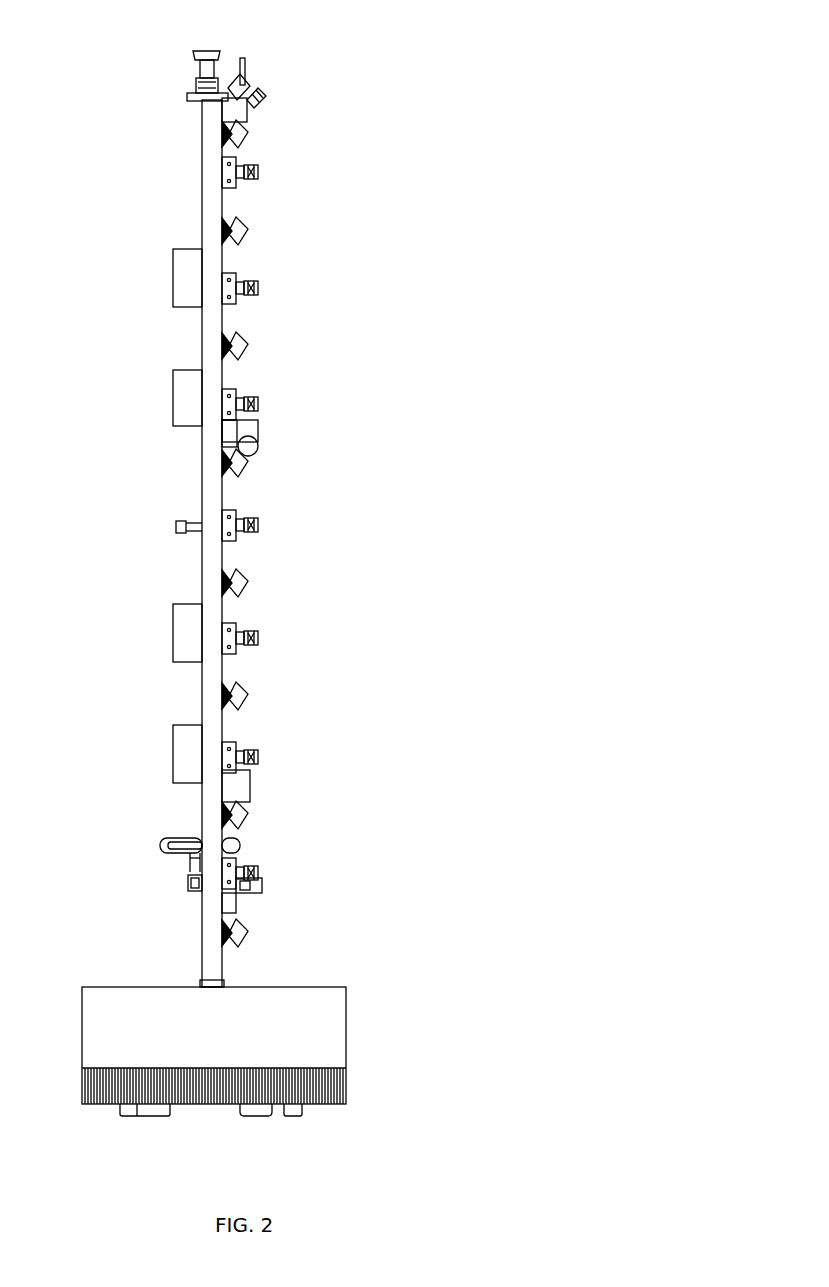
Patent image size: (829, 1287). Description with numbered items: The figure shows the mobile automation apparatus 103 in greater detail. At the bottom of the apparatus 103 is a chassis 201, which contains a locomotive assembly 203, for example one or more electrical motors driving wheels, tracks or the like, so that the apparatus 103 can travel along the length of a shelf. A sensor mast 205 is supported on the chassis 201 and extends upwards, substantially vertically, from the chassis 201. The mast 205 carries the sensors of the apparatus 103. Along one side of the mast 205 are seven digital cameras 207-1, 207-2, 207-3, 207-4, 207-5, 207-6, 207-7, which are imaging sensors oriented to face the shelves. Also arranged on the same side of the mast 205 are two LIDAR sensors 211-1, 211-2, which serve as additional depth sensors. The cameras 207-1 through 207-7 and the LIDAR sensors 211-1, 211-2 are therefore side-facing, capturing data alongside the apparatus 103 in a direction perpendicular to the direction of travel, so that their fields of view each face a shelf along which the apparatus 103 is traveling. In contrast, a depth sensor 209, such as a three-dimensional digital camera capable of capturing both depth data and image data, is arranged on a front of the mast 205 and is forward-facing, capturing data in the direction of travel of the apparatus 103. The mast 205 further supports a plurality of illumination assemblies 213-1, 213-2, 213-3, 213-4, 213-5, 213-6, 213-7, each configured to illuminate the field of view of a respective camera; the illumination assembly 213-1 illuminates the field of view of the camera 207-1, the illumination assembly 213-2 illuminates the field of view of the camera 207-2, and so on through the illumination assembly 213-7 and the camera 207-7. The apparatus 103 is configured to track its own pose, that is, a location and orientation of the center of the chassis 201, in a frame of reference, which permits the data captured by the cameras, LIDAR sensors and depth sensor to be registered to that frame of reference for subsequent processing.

The mobile automation apparatus 103 is at (346, 38).
The chassis 201 is at (348, 1092).
The locomotive assembly 203 is at (250, 1108).
The sensor mast 205 is at (207, 150).
The digital camera 207-1 is at (259, 176).
The digital camera 207-2 is at (259, 292).
The digital camera 207-3 is at (259, 408).
The digital camera 207-4 is at (259, 529).
The digital camera 207-5 is at (259, 642).
The digital camera 207-6 is at (259, 761).
The digital camera 207-7 is at (259, 877).
The depth sensor 209 is at (170, 846).
The LIDAR sensor 211-1 is at (258, 434).
The LIDAR sensor 211-2 is at (250, 778).
The illumination assembly 213-1 is at (249, 233).
The illumination assembly 213-2 is at (249, 348).
The illumination assembly 213-3 is at (249, 465).
The illumination assembly 213-4 is at (249, 585).
The illumination assembly 213-5 is at (249, 698).
The illumination assembly 213-6 is at (249, 817).
The illumination assembly 213-7 is at (249, 935).